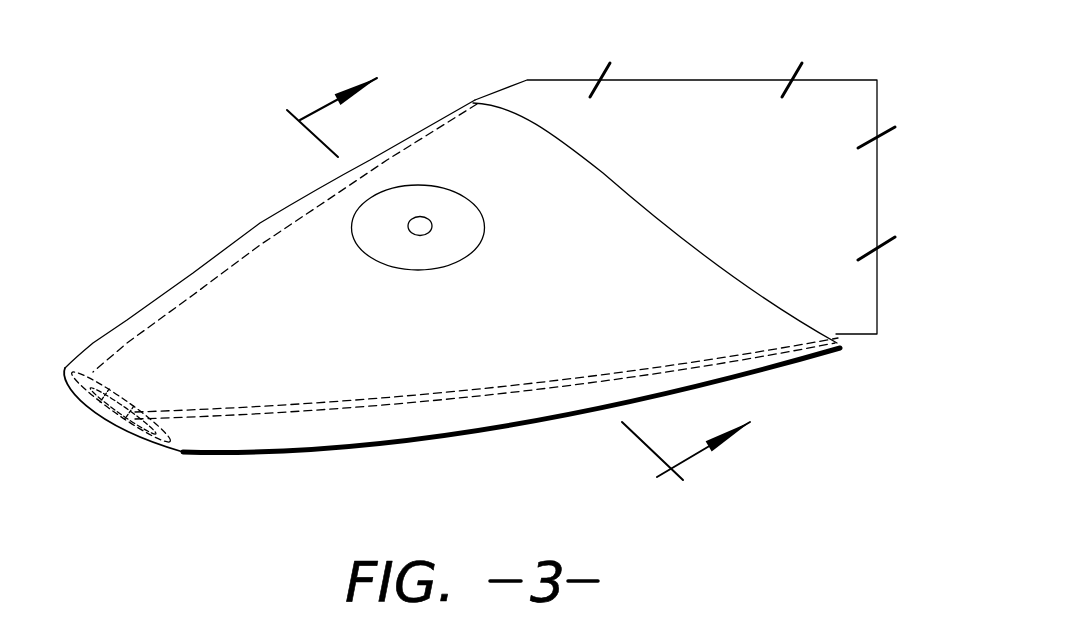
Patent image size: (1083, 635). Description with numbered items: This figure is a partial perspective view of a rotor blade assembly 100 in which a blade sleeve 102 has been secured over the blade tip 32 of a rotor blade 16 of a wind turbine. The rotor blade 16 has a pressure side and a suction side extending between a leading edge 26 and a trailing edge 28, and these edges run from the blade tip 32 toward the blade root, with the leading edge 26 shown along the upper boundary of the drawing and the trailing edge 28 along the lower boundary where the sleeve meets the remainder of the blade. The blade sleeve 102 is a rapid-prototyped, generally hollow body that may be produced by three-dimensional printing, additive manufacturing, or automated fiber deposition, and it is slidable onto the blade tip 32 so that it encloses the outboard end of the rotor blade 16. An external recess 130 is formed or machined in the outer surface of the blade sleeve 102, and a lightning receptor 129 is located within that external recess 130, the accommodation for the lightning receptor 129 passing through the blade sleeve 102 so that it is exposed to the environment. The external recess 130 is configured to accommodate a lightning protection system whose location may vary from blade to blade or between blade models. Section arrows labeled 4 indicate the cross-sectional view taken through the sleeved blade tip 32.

The section line 4- 4 is at (536, 264).
The rotor blade 16 is at (733, 115).
The leading edge 26 is at (503, 90).
The trailing edge 28 is at (858, 340).
The blade tip 32 is at (83, 408).
The rotor blade assembly 100 is at (200, 98).
The blade sleeve 102 is at (138, 278).
The lightning receptor 129 is at (432, 224).
The external recess 130 is at (352, 236).